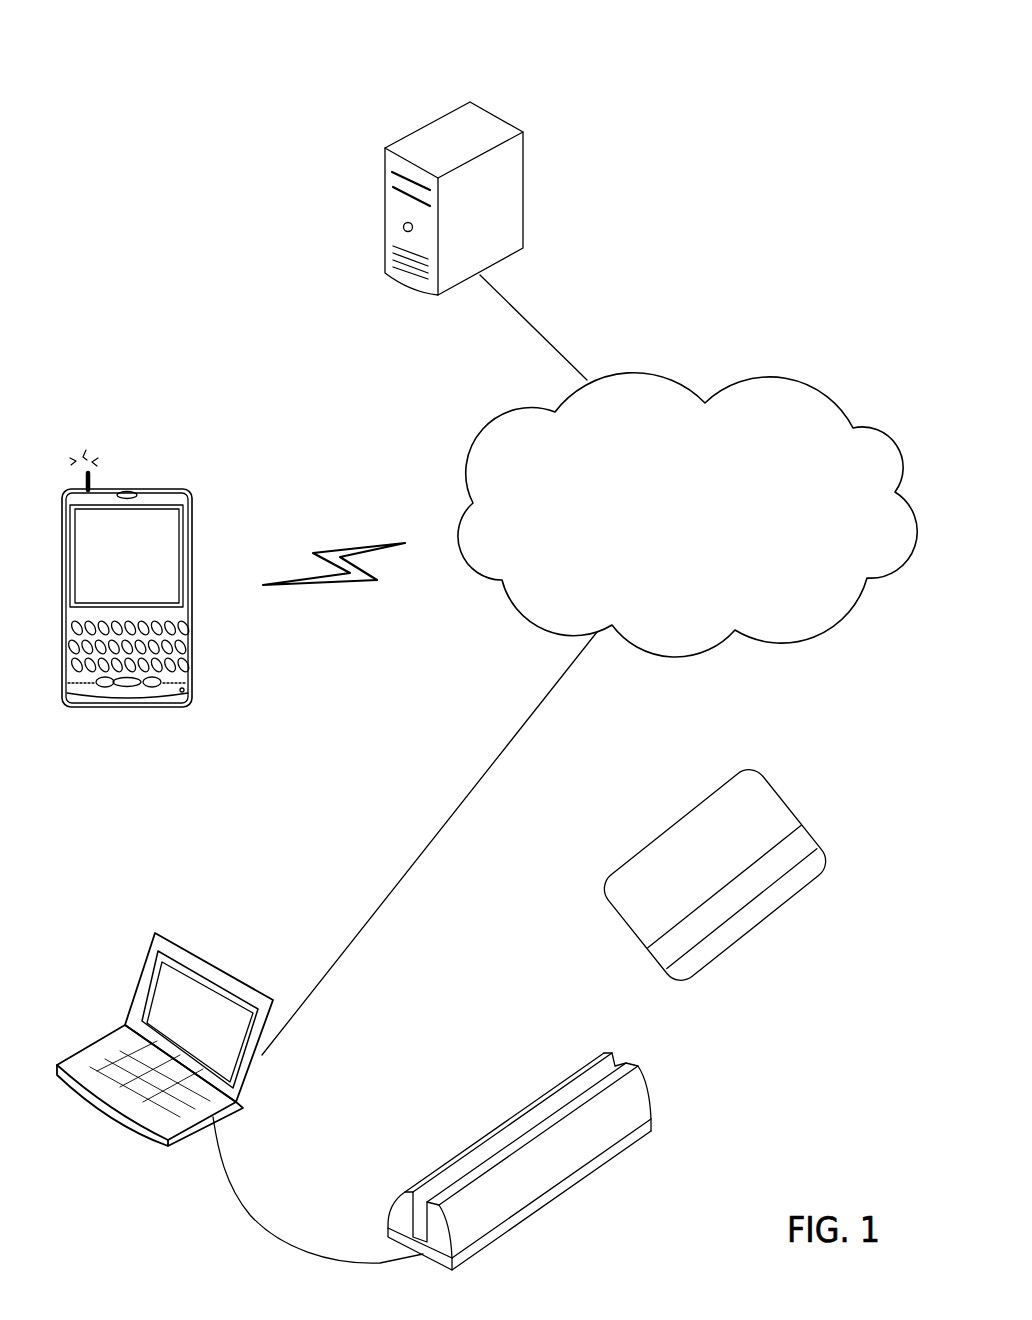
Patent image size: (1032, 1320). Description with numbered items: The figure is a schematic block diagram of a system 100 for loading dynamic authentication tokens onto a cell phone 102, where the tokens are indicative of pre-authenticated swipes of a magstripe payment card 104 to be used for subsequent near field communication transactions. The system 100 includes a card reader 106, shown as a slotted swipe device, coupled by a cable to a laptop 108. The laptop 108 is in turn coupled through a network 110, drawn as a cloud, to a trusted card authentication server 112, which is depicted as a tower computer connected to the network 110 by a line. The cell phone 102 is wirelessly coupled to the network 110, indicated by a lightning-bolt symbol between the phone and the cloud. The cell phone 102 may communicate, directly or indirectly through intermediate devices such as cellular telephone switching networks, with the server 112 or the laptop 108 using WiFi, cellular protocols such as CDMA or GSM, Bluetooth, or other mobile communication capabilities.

The system 100 is at (780, 103).
The cell phone 102 is at (148, 484).
The magstripe payment card 104 is at (762, 780).
The card reader 106 is at (648, 1090).
The laptop 108 is at (180, 943).
The network 110 is at (830, 388).
The trusted card authentication server 112 is at (500, 115).